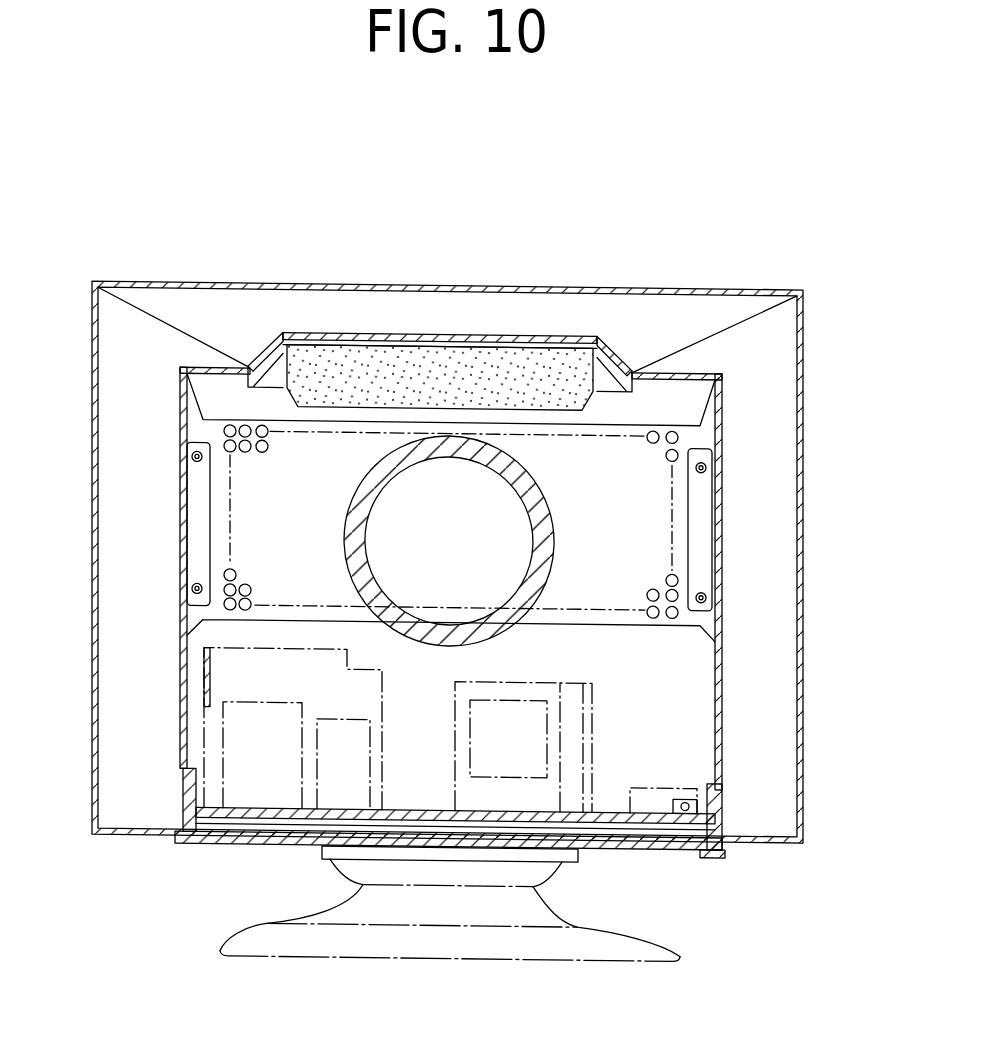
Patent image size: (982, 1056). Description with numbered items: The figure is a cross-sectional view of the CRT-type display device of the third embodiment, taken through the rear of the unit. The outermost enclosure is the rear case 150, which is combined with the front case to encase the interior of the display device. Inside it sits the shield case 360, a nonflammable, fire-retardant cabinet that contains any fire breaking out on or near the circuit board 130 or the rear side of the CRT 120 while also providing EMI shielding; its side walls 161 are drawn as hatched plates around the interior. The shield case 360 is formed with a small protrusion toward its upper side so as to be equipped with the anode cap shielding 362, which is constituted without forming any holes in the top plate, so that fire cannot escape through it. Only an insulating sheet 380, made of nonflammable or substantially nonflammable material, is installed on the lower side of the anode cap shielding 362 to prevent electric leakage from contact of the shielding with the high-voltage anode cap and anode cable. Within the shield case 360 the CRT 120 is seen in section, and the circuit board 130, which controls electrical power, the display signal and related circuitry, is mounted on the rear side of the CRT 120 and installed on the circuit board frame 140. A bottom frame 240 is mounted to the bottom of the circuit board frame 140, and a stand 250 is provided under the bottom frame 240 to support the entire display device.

The CRT 120 is at (345, 544).
The circuit board 130 is at (265, 804).
The circuit board frame 140 is at (182, 798).
The rear case 150 is at (803, 540).
The chassis side wall 161 is at (182, 633).
The bottom frame 240 is at (210, 833).
The stand 250 is at (525, 936).
The shield case 360 is at (185, 356).
The anode cap shielding 362 is at (373, 329).
The insulating sheet 380 is at (503, 336).